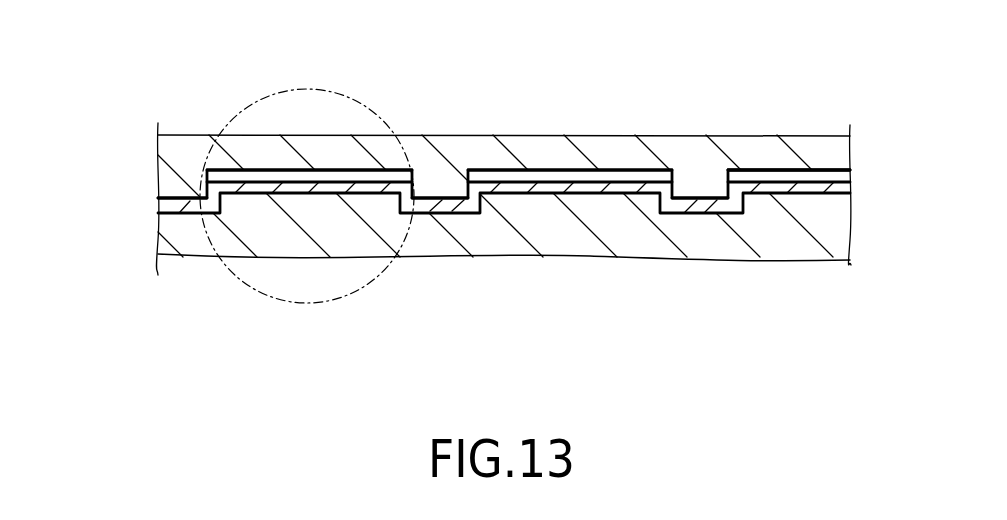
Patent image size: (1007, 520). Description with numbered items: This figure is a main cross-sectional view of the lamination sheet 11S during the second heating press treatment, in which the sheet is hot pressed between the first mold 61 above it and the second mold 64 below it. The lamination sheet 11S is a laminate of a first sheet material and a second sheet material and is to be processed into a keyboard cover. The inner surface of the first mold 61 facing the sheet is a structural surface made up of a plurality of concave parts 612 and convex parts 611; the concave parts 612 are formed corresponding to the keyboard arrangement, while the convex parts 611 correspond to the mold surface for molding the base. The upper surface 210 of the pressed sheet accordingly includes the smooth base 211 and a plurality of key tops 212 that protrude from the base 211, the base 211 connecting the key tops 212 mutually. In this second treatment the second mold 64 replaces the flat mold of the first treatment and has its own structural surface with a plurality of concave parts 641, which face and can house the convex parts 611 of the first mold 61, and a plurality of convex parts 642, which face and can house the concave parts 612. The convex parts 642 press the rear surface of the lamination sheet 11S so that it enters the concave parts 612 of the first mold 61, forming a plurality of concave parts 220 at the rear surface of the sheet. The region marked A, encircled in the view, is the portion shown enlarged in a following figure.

The first mold 61 is at (157, 155).
The second mold 64 is at (162, 237).
The convex parts 611 is at (458, 196).
The concave parts 612 is at (371, 175).
The concave parts 220 is at (250, 195).
The concave parts 641 is at (700, 283).
The convex parts 642 is at (527, 191).
The surface 210 is at (835, 67).
The base 211 is at (721, 196).
The key tops 212 is at (280, 170).
The lamination sheet 11S is at (163, 207).
The A part A is at (248, 107).